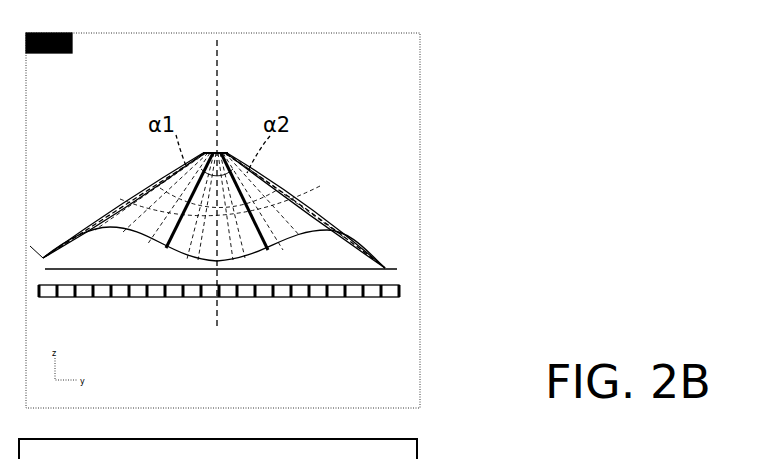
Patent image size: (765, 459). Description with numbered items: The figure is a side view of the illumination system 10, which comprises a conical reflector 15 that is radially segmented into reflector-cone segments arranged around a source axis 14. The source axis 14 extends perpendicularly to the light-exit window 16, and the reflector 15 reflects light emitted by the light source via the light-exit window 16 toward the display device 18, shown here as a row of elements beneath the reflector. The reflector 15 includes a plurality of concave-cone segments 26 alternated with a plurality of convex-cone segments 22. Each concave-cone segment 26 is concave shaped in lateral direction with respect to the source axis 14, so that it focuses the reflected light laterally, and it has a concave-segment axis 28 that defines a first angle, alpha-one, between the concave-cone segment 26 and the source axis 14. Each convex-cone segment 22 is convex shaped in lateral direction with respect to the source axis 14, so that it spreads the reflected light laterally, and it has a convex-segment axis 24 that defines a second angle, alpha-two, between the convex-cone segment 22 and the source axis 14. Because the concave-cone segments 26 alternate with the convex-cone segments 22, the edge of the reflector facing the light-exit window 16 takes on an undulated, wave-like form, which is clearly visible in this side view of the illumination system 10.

The illumination system 10 is at (476, 50).
The source axis 14 is at (215, 42).
The conical reflector 15 is at (300, 193).
The light-exit window 16 is at (385, 268).
The display device 18 is at (353, 297).
The convex-cone segment 22 is at (238, 250).
The convex-segment axis 24 is at (215, 263).
The concave-cone segment 26 is at (147, 228).
The concave-segment axis 28 is at (108, 203).